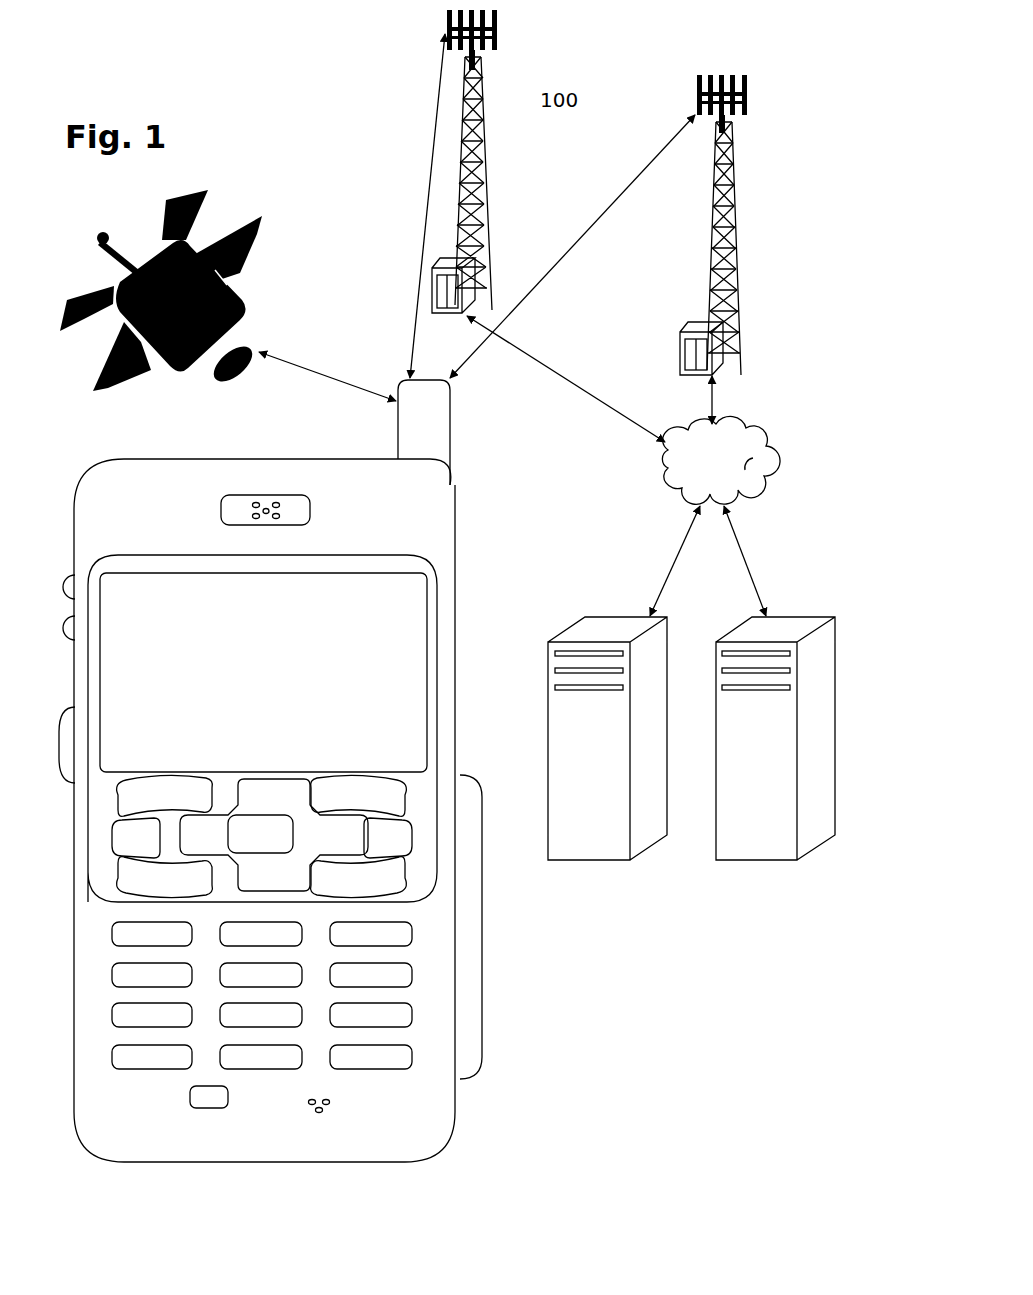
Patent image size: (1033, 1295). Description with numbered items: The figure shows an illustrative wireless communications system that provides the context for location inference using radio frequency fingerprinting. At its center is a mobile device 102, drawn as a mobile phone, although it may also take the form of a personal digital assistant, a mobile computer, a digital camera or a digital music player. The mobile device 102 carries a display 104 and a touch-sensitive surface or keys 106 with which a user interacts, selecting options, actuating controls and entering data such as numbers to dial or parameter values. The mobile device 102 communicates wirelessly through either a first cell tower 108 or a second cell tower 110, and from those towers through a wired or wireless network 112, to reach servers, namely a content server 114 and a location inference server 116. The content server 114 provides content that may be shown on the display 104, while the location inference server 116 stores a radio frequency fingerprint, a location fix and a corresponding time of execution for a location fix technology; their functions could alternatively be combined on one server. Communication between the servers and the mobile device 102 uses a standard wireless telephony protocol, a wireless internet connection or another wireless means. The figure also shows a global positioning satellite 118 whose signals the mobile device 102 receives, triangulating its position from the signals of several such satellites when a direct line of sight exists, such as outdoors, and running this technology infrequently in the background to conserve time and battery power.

The mobile device 102 is at (118, 1142).
The display 104 is at (397, 605).
The keys 106 is at (460, 1077).
The first cell tower 108 is at (462, 179).
The second cell tower 110 is at (702, 245).
The network 112 is at (665, 495).
The content server 114 is at (564, 860).
The location inference server 116 is at (729, 860).
The global positioning satellite 118 is at (241, 307).